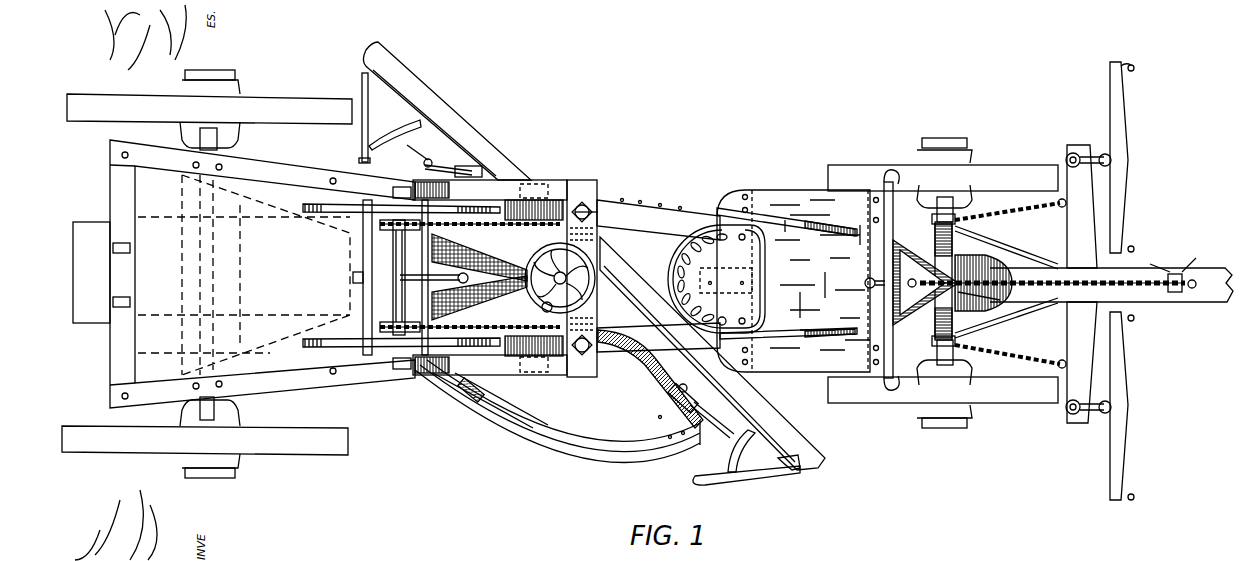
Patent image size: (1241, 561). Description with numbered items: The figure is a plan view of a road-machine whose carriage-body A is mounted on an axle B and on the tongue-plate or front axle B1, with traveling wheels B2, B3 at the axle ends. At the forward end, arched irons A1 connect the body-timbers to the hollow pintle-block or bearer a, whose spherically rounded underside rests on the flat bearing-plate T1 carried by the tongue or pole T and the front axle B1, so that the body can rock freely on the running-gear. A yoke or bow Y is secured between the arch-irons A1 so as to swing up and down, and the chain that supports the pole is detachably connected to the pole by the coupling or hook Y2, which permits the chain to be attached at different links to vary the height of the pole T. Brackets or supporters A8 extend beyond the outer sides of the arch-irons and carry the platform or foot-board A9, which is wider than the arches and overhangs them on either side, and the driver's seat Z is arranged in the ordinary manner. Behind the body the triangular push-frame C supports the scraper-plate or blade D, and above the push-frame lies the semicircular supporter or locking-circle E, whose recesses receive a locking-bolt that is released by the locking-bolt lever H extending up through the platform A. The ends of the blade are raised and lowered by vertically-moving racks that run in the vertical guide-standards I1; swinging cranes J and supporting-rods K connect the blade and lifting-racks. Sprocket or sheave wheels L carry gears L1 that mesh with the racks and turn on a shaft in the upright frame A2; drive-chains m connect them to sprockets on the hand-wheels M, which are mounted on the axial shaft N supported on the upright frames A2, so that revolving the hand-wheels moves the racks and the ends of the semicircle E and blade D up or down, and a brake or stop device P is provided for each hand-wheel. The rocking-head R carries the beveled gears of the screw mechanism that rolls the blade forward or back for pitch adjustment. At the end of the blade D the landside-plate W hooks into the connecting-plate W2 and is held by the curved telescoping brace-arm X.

The carriage-body A is at (396, 274).
The arched irons A1 is at (712, 210).
The upright frame A2 is at (495, 278).
The brackets or supporters A8 is at (820, 285).
The platform or foot-board A9 is at (793, 281).
The axle B is at (576, 283).
The tongue-plate or front axle B1 is at (999, 283).
The traveling wheels B2 is at (207, 274).
The traveling wheels B3 is at (943, 284).
The triangular push-frame C is at (479, 277).
The scraper-plate or blade D is at (594, 256).
The semicircular supporter or locking-circle E is at (557, 411).
The locking-bolt lever H is at (434, 270).
The vertical guide-standards I1 is at (591, 212).
The swinging cranes J is at (621, 290).
The supporting-rods K is at (579, 294).
The sprocket or sheave wheels L is at (527, 278).
The gears L1 is at (520, 362).
The hand-wheels M is at (401, 275).
The drive-chains m is at (470, 277).
The axial shaft N is at (387, 276).
The brake or stop device P is at (389, 277).
The rocking-head R is at (560, 278).
The tongue or pole T is at (1076, 281).
The bearing-plate T1 is at (979, 307).
The landside-plate W is at (750, 482).
The connecting-plate W2 is at (790, 470).
The brace-arm X is at (562, 296).
The yoke or bow Y is at (925, 287).
The coupling or hook Y2 is at (1185, 305).
The driver's seat Z is at (716, 279).
The pintle-block or bearer a is at (971, 283).